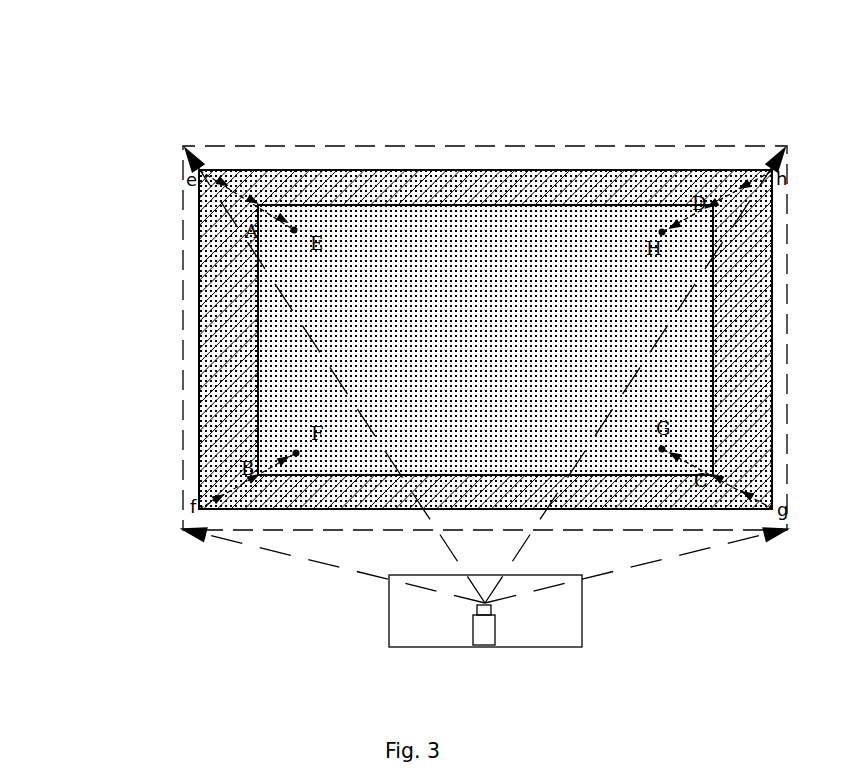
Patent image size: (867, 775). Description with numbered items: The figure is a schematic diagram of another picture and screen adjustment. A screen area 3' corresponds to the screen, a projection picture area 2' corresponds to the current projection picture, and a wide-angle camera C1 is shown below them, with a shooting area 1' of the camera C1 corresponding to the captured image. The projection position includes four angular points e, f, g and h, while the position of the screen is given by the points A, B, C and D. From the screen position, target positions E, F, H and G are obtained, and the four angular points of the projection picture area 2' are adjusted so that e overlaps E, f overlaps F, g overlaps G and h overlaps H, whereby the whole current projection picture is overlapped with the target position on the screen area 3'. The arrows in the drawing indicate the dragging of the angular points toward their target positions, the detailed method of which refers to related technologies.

The shooting area 1' is at (409, 338).
The projection picture area 2' is at (433, 282).
The screen area 3' is at (485, 287).
The wide-angle camera C1 is at (485, 629).